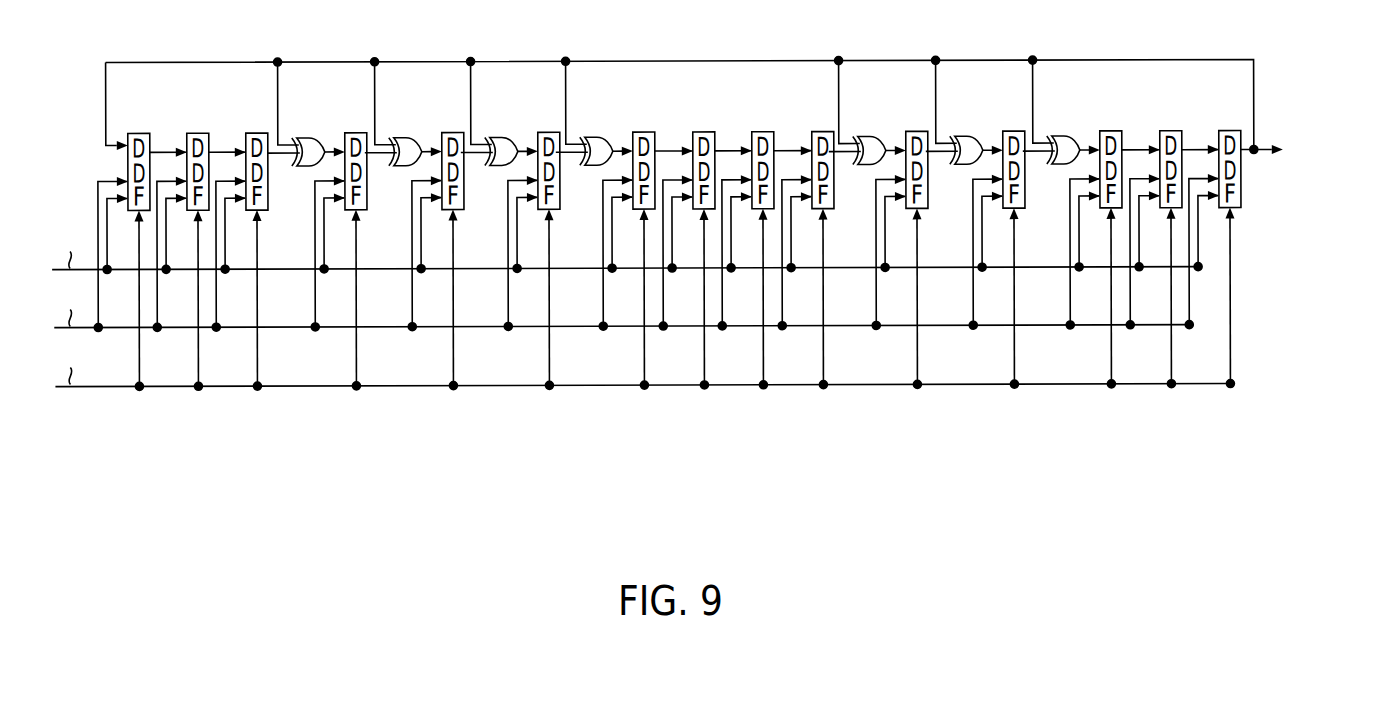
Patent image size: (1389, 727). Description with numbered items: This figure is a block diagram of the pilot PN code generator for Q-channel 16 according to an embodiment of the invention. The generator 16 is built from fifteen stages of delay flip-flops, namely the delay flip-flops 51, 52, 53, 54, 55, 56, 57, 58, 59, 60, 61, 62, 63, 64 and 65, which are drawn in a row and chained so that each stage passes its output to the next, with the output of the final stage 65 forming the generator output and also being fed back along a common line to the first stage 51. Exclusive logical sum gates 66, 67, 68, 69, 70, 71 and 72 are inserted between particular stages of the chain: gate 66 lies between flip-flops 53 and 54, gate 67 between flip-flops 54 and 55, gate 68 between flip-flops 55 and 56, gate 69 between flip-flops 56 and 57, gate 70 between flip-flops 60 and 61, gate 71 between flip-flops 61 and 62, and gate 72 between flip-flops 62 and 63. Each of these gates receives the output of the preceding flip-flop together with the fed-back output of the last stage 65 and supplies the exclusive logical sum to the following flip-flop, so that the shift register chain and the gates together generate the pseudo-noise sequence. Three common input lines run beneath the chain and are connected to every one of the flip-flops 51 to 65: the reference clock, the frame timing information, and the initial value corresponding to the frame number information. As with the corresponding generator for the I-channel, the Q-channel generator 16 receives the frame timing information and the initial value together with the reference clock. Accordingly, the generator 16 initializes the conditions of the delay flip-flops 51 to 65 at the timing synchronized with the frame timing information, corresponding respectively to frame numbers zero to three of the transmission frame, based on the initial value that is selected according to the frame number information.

The pilot PN code generator for Q-channel 16 is at (1153, 34).
The delay flip-flop 51 is at (123, 234).
The delay flip-flop 52 is at (180, 234).
The delay flip-flop 53 is at (239, 234).
The delay flip-flop 54 is at (340, 234).
The delay flip-flop 55 is at (437, 234).
The delay flip-flop 56 is at (533, 233).
The delay flip-flop 57 is at (628, 233).
The delay flip-flop 58 is at (686, 233).
The delay flip-flop 59 is at (745, 233).
The delay flip-flop 60 is at (805, 233).
The delay flip-flop 61 is at (901, 232).
The delay flip-flop 62 is at (998, 232).
The delay flip-flop 63 is at (1095, 232).
The delay flip-flop 64 is at (1153, 232).
The delay flip-flop 65 is at (1212, 232).
The exclusive logical sum gate 66 is at (306, 112).
The exclusive logical sum gate 67 is at (403, 112).
The exclusive logical sum gate 68 is at (499, 111).
The exclusive logical sum gate 69 is at (594, 111).
The exclusive logical sum gate 70 is at (867, 110).
The exclusive logical sum gate 71 is at (964, 110).
The exclusive logical sum gate 72 is at (1061, 110).